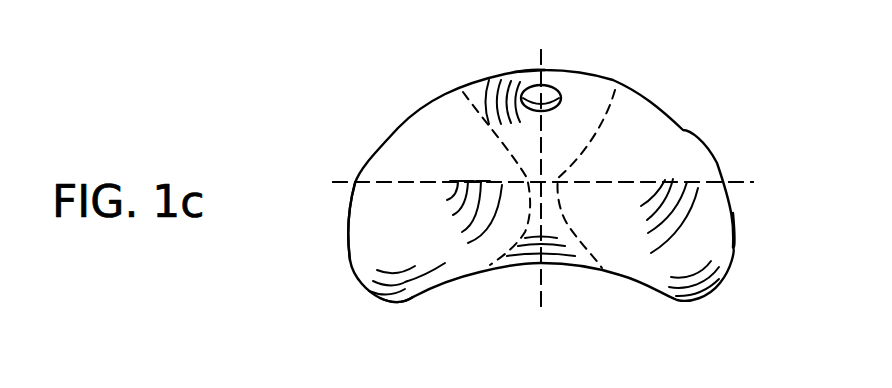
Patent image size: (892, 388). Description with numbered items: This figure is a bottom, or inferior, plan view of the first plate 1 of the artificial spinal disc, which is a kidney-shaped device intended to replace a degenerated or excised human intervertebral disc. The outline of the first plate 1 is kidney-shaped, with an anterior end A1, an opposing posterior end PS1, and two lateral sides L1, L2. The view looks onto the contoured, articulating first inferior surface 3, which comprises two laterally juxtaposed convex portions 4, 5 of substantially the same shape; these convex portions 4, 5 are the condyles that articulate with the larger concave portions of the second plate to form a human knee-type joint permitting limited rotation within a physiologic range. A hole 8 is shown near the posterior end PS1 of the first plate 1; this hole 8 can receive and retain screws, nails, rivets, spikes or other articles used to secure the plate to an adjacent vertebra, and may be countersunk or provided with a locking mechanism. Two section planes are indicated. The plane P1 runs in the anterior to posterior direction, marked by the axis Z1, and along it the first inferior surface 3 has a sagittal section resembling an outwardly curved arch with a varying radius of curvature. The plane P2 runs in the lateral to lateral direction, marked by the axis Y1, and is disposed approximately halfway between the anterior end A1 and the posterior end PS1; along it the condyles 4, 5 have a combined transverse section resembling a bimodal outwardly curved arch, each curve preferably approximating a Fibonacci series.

The first plate 1 is at (320, 258).
The first inferior surface 3 is at (443, 142).
The convex portion 4 is at (460, 212).
The convex portion 5 is at (623, 220).
The hole 8 is at (553, 100).
The anterior end A1 is at (400, 303).
The posterior end PS1 is at (516, 70).
The lateral side L1 is at (347, 228).
The lateral side L2 is at (735, 246).
The vertical axis Z1 is at (545, 61).
The plane P1 is at (618, 157).
The horizontal axis Y1 is at (740, 181).
The plane P2 is at (564, 145).